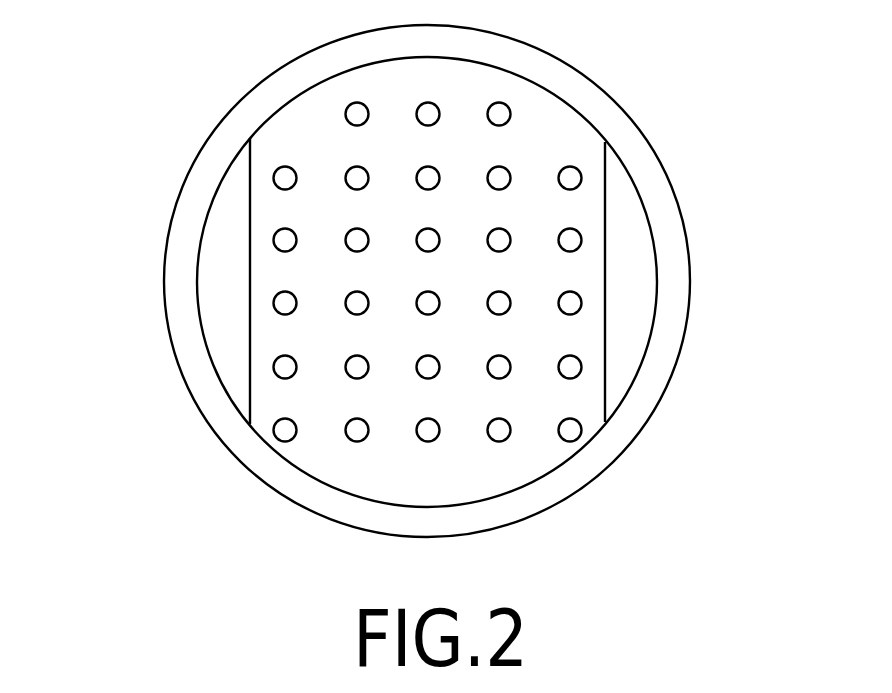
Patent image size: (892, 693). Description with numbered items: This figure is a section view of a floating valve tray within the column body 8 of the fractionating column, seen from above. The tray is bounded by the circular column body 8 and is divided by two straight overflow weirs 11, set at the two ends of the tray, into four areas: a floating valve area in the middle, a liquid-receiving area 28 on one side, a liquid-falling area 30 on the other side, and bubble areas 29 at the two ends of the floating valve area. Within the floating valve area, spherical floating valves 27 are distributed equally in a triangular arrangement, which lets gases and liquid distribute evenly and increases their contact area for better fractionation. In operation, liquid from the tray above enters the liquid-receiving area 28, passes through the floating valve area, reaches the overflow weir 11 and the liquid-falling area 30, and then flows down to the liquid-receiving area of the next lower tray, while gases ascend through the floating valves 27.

The column body 8 is at (613, 442).
The overflow weir 11 is at (250, 288).
The floating valve 27 is at (499, 114).
The liquid-receiving area 28 is at (615, 297).
The bubble area 29 is at (483, 477).
The liquid-falling area 30 is at (233, 200).